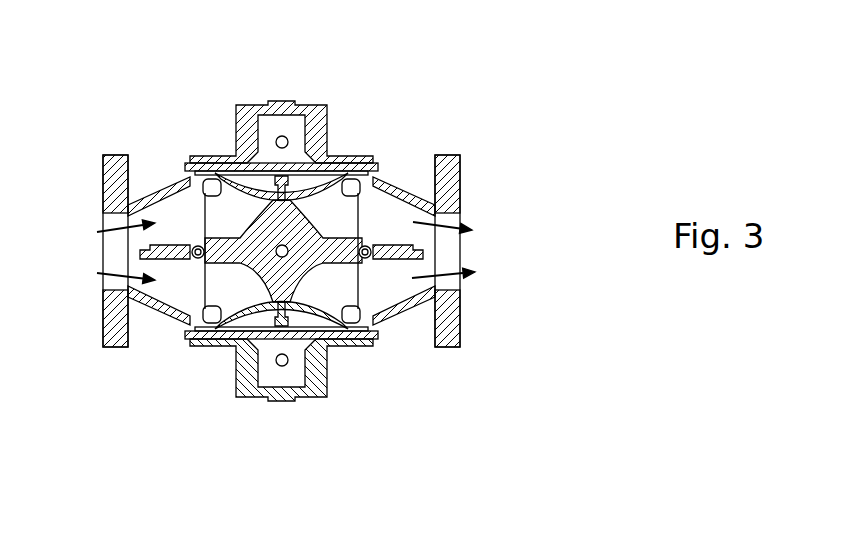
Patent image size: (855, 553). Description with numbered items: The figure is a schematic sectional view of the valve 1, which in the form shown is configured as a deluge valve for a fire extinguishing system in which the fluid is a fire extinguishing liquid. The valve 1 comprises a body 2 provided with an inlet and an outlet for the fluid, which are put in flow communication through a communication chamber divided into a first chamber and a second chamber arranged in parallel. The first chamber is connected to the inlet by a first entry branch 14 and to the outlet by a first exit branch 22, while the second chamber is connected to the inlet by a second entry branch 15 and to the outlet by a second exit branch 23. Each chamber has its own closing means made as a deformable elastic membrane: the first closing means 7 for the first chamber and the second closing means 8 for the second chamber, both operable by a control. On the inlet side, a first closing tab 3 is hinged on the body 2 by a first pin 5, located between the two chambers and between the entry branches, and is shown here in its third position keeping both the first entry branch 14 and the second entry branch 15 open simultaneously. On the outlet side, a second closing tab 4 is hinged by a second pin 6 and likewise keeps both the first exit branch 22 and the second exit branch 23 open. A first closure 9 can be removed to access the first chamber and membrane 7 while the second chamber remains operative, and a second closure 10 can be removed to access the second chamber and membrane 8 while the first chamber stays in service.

The valve 1 is at (557, 433).
The body 2 is at (144, 300).
The first closing tab 3 is at (168, 250).
The second closing tab 4 is at (397, 250).
The first pin 5 is at (201, 256).
The second pin 6 is at (362, 256).
The first closing means 7 is at (312, 187).
The second closing means 8 is at (243, 313).
The first closure 9 is at (245, 125).
The second closure 10 is at (320, 378).
The first entry branch 14 is at (108, 232).
The second entry branch 15 is at (108, 276).
The first exit branch 22 is at (466, 233).
The second exit branch 23 is at (465, 276).